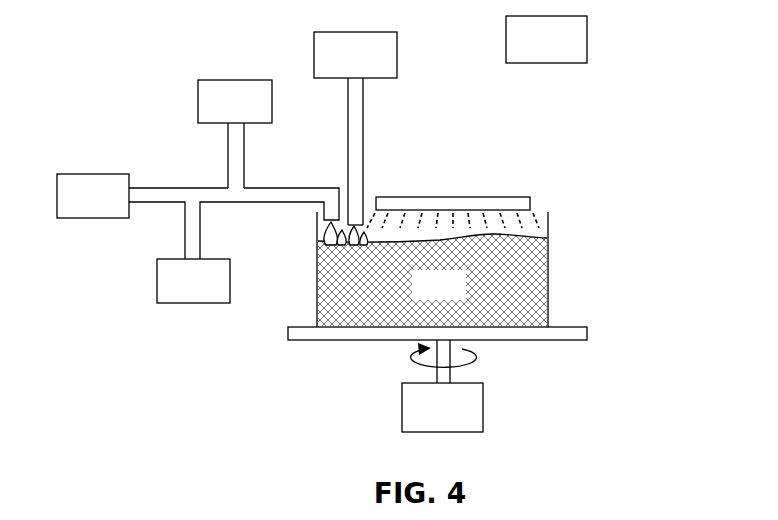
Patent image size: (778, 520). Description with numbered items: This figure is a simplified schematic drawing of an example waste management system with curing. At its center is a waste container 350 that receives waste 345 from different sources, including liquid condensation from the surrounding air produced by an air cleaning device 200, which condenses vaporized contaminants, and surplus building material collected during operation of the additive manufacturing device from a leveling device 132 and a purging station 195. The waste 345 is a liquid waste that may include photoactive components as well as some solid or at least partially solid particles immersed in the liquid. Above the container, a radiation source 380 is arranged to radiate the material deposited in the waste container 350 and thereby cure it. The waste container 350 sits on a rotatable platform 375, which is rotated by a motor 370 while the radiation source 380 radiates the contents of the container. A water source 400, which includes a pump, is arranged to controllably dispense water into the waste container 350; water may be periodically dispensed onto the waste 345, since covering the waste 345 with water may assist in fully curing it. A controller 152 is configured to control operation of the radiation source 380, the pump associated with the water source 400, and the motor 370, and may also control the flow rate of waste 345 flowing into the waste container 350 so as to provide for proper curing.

The leveling device 132 is at (171, 296).
The controller 152 is at (524, 54).
The purging station 195 is at (71, 211).
The air cleaning device 200 is at (213, 119).
The waste 345 is at (417, 296).
The waste container 350 is at (548, 289).
The motor 370 is at (421, 424).
The rotatable platform 375 is at (528, 342).
The radiation source 380 is at (488, 197).
The water source 400 is at (333, 69).